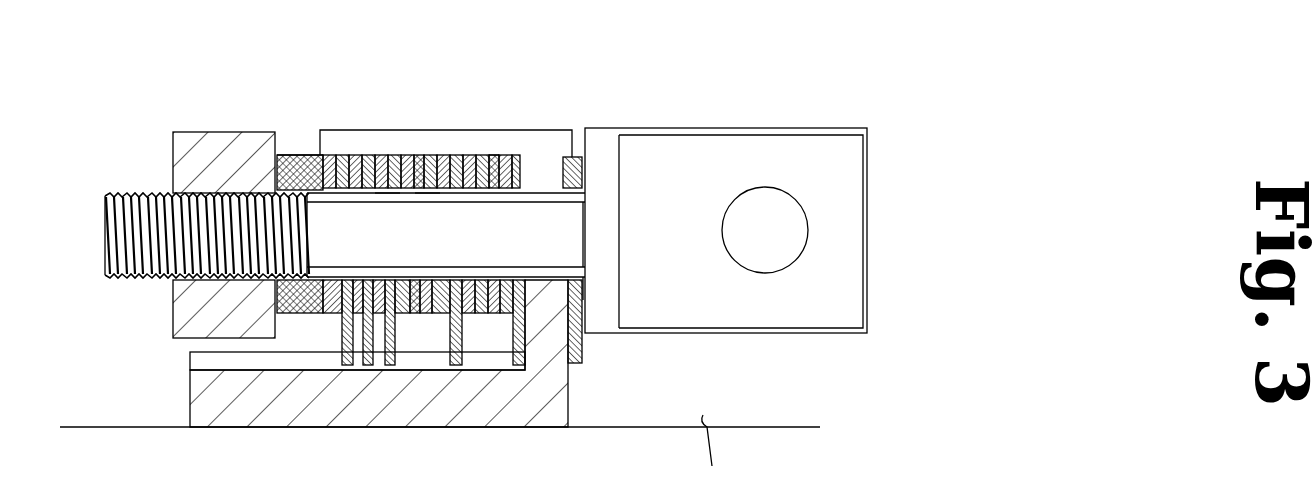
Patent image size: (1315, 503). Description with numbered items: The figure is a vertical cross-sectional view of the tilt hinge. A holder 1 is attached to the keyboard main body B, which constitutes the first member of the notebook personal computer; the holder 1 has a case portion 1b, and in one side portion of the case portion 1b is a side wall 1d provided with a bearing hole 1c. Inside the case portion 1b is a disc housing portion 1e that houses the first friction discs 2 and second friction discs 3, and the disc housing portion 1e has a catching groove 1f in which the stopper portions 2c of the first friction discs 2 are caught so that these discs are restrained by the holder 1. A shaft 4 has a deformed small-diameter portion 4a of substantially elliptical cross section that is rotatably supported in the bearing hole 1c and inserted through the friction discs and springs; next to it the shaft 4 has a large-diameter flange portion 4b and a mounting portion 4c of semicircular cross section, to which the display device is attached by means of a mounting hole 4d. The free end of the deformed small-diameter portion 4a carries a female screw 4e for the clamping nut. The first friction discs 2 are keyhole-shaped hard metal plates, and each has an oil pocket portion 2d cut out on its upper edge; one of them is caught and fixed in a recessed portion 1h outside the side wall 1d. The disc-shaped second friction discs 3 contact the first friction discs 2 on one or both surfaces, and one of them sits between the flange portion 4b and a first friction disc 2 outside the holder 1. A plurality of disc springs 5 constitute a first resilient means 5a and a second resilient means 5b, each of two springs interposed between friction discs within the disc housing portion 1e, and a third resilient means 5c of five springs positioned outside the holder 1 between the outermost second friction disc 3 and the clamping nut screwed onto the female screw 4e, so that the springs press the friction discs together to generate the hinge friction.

The holder 1 is at (483, 103).
The case portion 1b is at (390, 130).
The bearing hole 1c is at (585, 230).
The side wall 1d is at (555, 335).
The disc housing portion 1e is at (423, 130).
The catching groove 1f is at (437, 367).
The recessed portion 1h is at (585, 287).
The first friction disc 2 is at (380, 278).
The stopper portion 2c is at (368, 372).
The oil pocket portion 2d is at (370, 130).
The second friction disc 3 is at (343, 150).
The shaft 4 is at (760, 117).
The deformed small-diameter portion 4a is at (503, 227).
The flange portion 4b is at (603, 148).
The mounting portion 4c is at (838, 225).
The mounting hole 4d is at (778, 262).
The female screw 4e is at (128, 193).
The disc springs 5 is at (293, 158).
The first resilient means 5a is at (490, 157).
The second resilient means 5b is at (447, 157).
The third resilient means 5c is at (306, 143).
The keyboard main body B is at (713, 455).